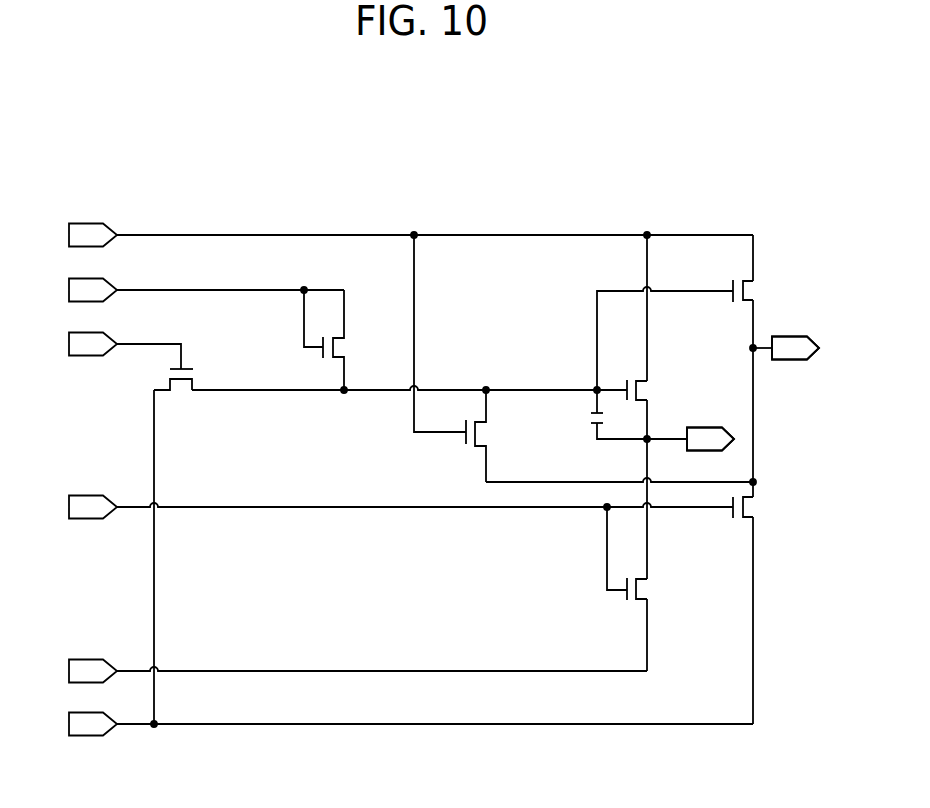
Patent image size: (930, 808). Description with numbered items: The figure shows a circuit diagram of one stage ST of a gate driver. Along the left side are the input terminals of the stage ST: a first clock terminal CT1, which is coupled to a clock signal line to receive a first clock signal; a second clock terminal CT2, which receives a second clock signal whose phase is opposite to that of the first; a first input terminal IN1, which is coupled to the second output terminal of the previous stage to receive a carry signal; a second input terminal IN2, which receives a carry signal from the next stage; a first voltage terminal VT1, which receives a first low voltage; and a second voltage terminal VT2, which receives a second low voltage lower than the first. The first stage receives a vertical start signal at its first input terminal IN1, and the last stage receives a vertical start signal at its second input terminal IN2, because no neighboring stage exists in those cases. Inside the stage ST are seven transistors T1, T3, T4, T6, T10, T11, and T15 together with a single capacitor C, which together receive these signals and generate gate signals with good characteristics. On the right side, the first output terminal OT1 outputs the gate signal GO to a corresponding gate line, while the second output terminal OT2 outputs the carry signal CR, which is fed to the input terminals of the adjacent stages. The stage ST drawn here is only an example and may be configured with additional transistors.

The stage ST is at (684, 178).
The first clock terminal CT1 is at (390, 233).
The second clock terminal CT2 is at (319, 505).
The first input terminal IN1 is at (187, 288).
The second input terminal IN2 is at (106, 348).
The first voltage terminal VT1 is at (337, 669).
The second voltage terminal VT2 is at (390, 722).
The transistor T1 is at (652, 388).
The transistor T3 is at (642, 555).
The transistor T4 is at (339, 340).
The transistor T6 is at (173, 396).
The transistor T10 is at (468, 358).
The transistor T11 is at (700, 507).
The transistor T15 is at (696, 331).
The capacitor C is at (612, 414).
The gate signal GO is at (689, 423).
The first output terminal OT1 is at (710, 454).
The carry signal CR is at (784, 332).
The second output terminal OT2 is at (795, 364).